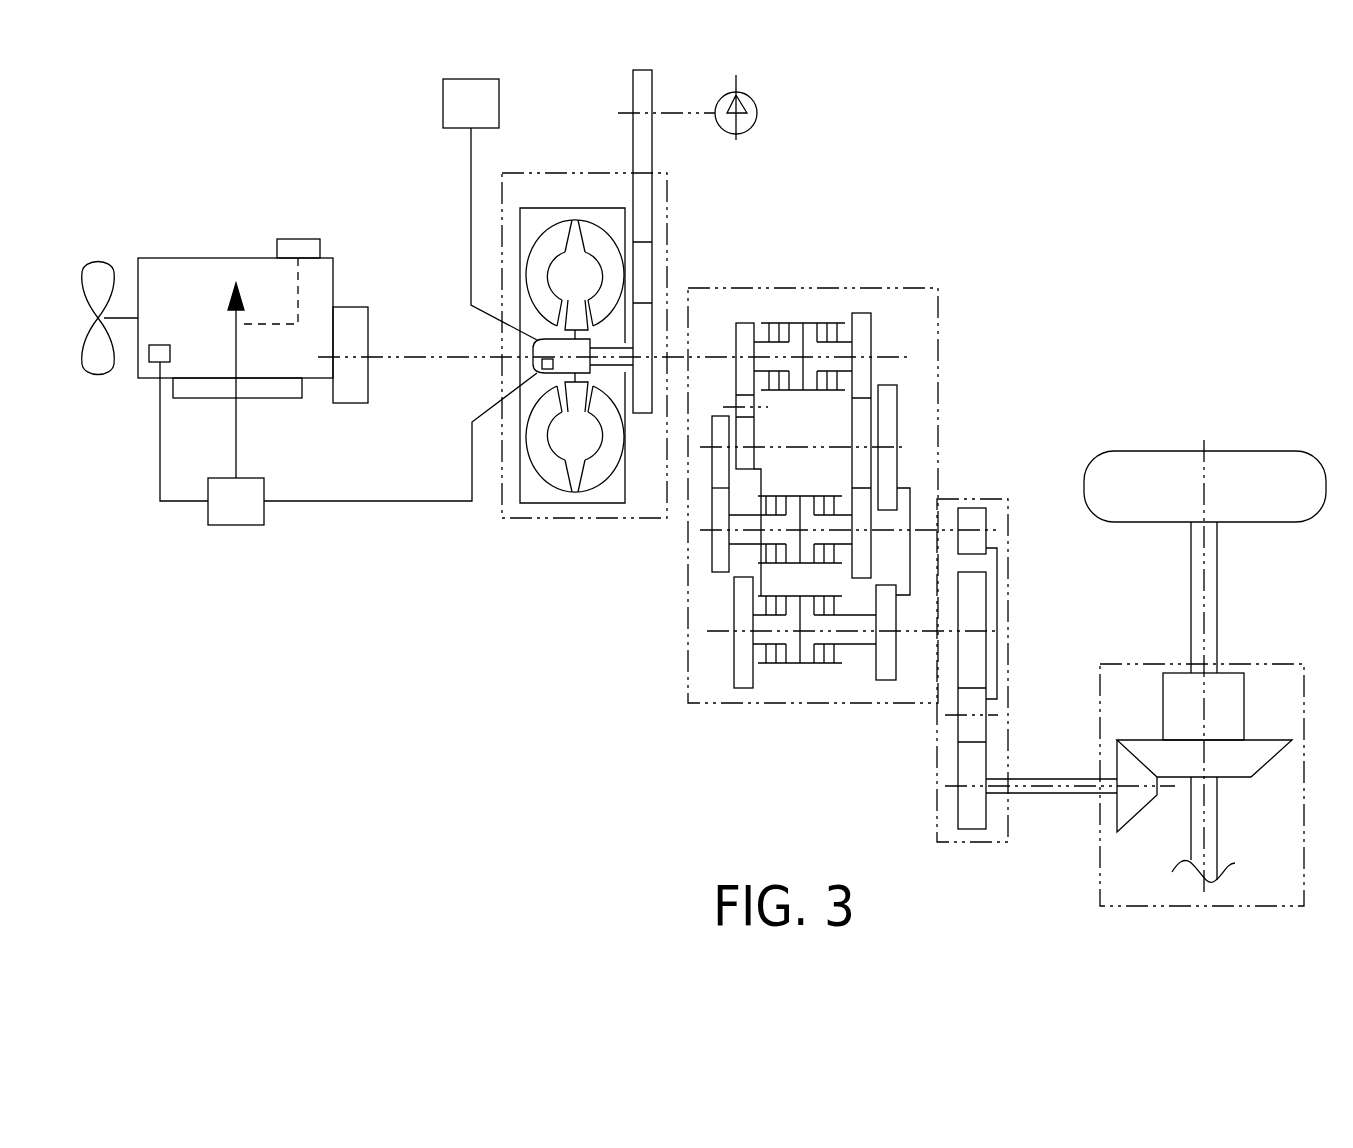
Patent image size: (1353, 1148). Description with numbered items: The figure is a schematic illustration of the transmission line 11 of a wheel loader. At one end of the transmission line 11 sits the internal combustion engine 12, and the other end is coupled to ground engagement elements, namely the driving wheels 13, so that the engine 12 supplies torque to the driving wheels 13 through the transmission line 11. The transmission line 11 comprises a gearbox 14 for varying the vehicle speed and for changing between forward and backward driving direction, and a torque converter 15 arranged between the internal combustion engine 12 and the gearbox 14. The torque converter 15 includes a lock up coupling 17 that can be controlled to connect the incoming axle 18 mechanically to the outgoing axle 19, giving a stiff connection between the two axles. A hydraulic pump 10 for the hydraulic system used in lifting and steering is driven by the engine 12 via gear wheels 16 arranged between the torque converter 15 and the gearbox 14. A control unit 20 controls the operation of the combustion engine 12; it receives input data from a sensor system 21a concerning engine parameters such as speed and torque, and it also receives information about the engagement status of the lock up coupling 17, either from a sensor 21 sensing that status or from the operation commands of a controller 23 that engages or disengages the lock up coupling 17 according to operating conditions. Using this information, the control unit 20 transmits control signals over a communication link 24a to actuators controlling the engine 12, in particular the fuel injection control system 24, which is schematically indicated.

The hydraulic pump 10 is at (757, 110).
The transmission line 11 is at (895, 247).
The internal combustion engine 12 is at (203, 278).
The driving wheels 13 is at (1224, 459).
The gearbox 14 is at (917, 322).
The torque converter 15 is at (532, 377).
The gear wheels 16 is at (643, 208).
The lock up coupling 17 is at (535, 338).
The incoming axle 18 is at (510, 357).
The outgoing axle 19 is at (625, 352).
The control unit 20 is at (372, 449).
The sensor 21 is at (540, 358).
The sensor system 21a is at (150, 351).
The controller 23 is at (490, 209).
The fuel injection control system 24 is at (303, 247).
The communication link 24a is at (238, 347).